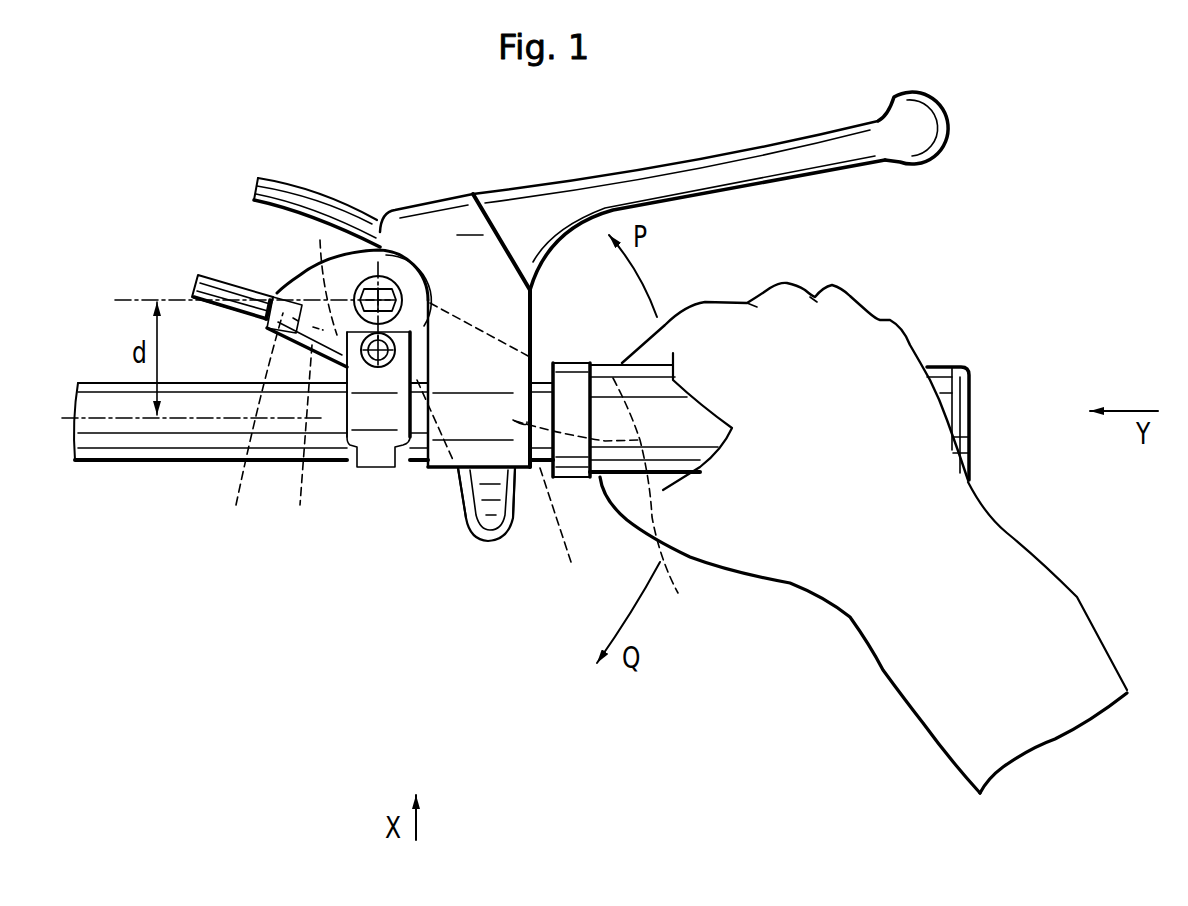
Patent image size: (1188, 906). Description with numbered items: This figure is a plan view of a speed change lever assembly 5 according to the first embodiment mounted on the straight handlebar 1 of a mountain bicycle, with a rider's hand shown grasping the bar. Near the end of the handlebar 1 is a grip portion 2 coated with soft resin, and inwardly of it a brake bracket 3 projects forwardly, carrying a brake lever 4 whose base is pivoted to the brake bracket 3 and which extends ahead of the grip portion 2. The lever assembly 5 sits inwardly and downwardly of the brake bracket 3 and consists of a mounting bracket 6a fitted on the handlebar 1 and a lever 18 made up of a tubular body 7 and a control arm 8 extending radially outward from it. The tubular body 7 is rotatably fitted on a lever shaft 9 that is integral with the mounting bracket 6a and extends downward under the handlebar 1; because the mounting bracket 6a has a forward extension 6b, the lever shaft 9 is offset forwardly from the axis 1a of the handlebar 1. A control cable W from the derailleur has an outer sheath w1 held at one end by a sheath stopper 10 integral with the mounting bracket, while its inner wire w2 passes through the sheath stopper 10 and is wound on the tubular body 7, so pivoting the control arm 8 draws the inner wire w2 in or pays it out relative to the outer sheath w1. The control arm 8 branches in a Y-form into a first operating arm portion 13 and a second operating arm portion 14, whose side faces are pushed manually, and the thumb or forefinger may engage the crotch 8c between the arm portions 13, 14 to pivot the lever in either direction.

The handlebar 1 is at (203, 467).
The axis of the handlebar 1a is at (90, 467).
The grip portion 2 is at (944, 364).
The brake bracket 3 is at (440, 197).
The brake lever 4 is at (683, 168).
The speed change lever assembly 5 is at (288, 278).
The mounting bracket 6a is at (374, 477).
The forward extension 6b is at (333, 370).
The tubular body 7 is at (331, 207).
The control arm 8 is at (489, 550).
The crotch 8c is at (570, 533).
The lever shaft 9 is at (388, 235).
The sheath stopper 10 is at (251, 431).
The first operating arm portion 13 is at (507, 527).
The second operating arm portion 14 is at (611, 504).
The lever 18 is at (455, 493).
The control cable W is at (240, 287).
The outer sheath w1 is at (217, 274).
The inner wire w2 is at (292, 447).